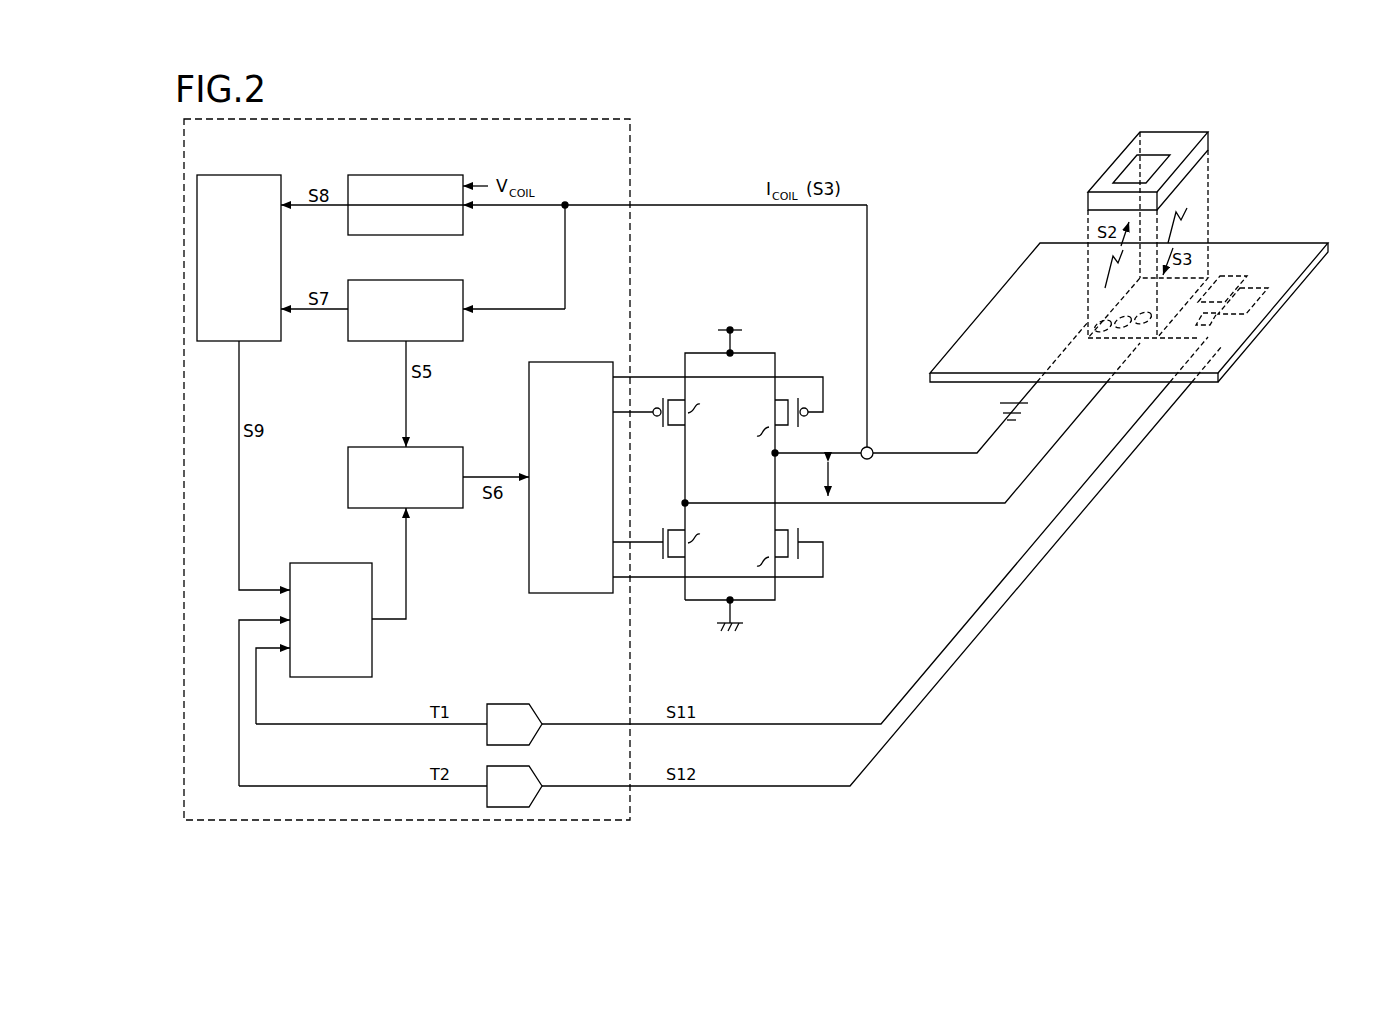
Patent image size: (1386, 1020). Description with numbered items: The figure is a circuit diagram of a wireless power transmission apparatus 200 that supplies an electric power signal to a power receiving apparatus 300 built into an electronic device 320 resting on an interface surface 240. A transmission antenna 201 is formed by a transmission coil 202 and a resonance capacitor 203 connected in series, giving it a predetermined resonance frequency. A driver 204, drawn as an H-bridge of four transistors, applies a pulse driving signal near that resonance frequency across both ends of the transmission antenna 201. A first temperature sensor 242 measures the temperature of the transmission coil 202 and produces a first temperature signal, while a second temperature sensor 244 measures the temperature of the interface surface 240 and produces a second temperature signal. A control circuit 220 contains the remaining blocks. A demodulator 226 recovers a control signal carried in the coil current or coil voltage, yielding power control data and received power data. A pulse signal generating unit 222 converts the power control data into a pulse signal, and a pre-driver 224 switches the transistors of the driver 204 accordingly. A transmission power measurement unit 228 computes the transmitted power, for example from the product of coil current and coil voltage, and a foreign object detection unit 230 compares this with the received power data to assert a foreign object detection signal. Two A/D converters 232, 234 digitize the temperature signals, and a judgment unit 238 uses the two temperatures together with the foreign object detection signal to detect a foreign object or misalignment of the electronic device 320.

The wireless power transmission apparatus 200 is at (798, 857).
The transmission antenna 201 is at (937, 242).
The transmission coil 202 is at (1115, 323).
The resonance capacitor 203 is at (999, 403).
The driver 204 is at (807, 637).
The control circuit 220 is at (470, 120).
The pulse signal generating unit 222 is at (428, 447).
The pre-driver 224 is at (558, 362).
The demodulator 226 is at (385, 280).
The transmission power measurement unit 228 is at (393, 174).
The foreign object detection unit 230 is at (228, 174).
The A/D converter 232 is at (542, 710).
The A/D converter 234 is at (542, 772).
The judgment unit 238 is at (315, 563).
The interface surface 240 is at (1309, 265).
The first temperature sensor 242 is at (1210, 308).
The second temperature sensor 244 is at (1225, 277).
The power receiving apparatus 300 is at (1122, 173).
The electronic device 320 is at (1168, 138).